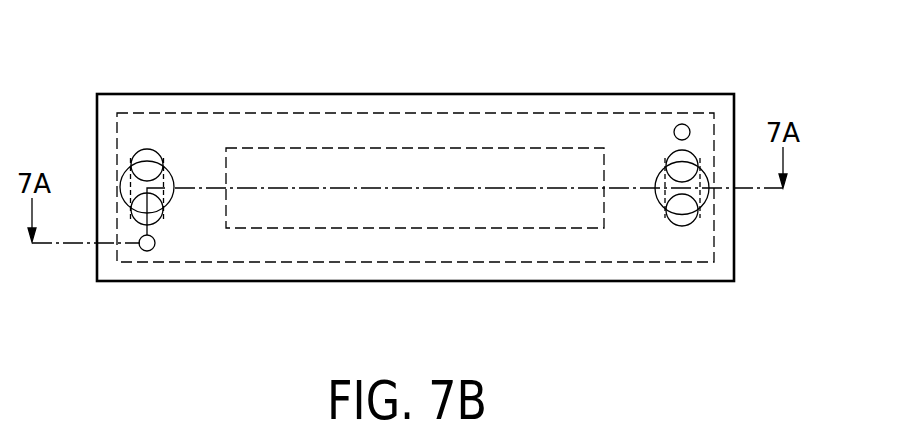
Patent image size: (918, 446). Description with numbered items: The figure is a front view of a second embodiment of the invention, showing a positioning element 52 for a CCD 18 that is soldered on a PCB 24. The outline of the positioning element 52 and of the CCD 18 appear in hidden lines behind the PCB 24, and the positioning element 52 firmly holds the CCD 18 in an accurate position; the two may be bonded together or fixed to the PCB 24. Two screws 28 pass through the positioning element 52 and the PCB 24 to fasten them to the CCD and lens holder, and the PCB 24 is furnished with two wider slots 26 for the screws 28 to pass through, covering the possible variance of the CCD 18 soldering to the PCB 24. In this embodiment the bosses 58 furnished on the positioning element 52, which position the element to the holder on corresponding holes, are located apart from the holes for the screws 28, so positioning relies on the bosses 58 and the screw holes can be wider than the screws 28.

The CCD 18 is at (552, 230).
The PCB 24 is at (382, 273).
The wider slots 26 is at (698, 213).
The screws 28 is at (147, 170).
The positioning element 52 is at (718, 128).
The bosses 58 is at (678, 124).